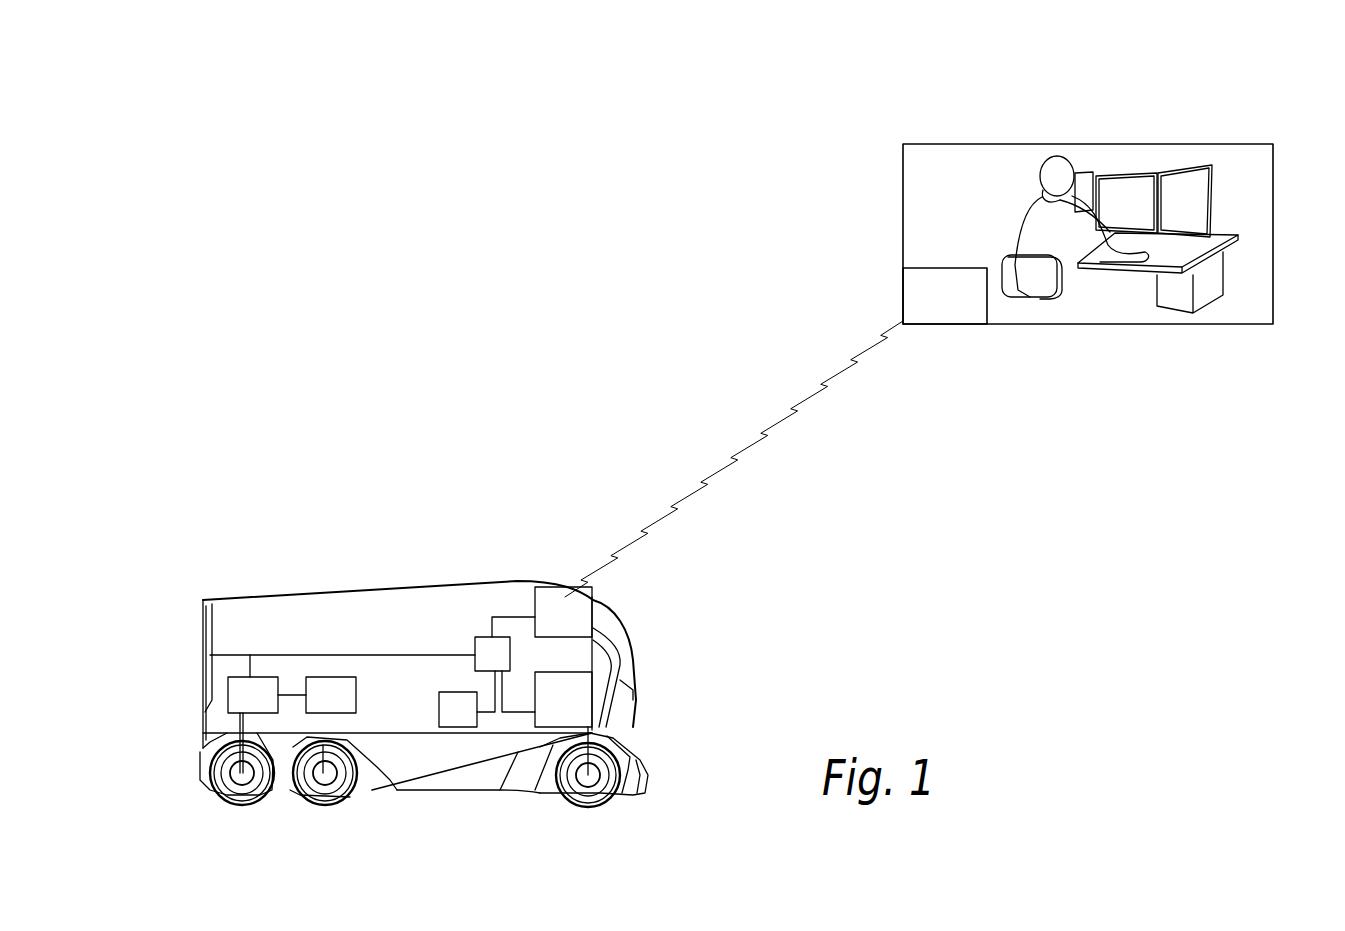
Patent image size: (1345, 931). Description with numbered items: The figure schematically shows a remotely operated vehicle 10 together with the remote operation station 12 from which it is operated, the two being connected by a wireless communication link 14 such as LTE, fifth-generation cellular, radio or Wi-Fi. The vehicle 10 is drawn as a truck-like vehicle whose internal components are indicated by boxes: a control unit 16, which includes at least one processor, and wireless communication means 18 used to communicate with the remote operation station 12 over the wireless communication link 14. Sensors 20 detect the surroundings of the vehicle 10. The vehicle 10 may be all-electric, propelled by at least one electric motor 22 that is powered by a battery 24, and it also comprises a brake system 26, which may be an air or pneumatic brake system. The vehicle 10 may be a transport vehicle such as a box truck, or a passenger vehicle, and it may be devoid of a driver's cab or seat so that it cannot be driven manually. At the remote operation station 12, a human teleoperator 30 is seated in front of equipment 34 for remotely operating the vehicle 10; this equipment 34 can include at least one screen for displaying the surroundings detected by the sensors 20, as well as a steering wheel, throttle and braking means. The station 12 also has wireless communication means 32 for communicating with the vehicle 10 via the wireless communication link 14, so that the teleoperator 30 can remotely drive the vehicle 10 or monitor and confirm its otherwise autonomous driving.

The remotely operated vehicle 10 is at (356, 562).
The remote operation station 12 is at (1071, 182).
The wireless communication link 14 is at (782, 417).
The control unit 16 is at (492, 648).
The wireless communication means 18 is at (553, 613).
The sensors 20 is at (563, 702).
The electric motor 22 is at (248, 695).
The battery 24 is at (333, 688).
The brake system 26 is at (455, 720).
The human teleoperator 30 is at (1035, 217).
The wireless communication means 32 is at (920, 288).
The equipment 34 is at (1193, 203).